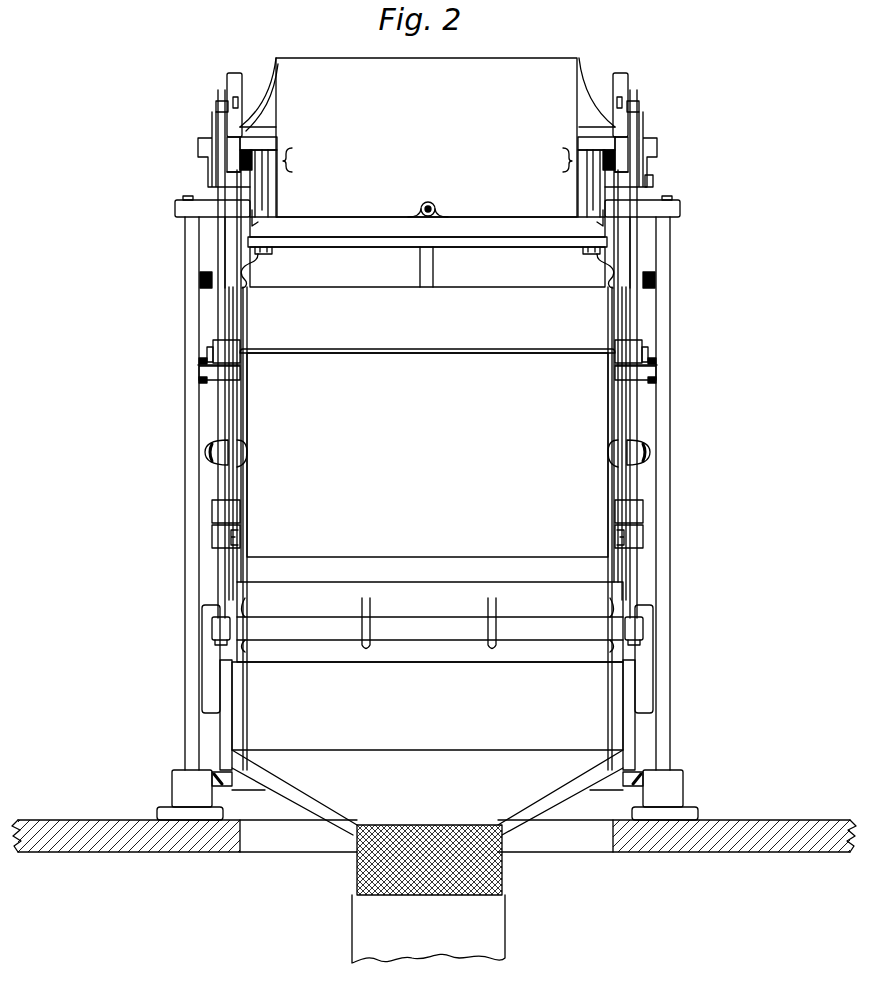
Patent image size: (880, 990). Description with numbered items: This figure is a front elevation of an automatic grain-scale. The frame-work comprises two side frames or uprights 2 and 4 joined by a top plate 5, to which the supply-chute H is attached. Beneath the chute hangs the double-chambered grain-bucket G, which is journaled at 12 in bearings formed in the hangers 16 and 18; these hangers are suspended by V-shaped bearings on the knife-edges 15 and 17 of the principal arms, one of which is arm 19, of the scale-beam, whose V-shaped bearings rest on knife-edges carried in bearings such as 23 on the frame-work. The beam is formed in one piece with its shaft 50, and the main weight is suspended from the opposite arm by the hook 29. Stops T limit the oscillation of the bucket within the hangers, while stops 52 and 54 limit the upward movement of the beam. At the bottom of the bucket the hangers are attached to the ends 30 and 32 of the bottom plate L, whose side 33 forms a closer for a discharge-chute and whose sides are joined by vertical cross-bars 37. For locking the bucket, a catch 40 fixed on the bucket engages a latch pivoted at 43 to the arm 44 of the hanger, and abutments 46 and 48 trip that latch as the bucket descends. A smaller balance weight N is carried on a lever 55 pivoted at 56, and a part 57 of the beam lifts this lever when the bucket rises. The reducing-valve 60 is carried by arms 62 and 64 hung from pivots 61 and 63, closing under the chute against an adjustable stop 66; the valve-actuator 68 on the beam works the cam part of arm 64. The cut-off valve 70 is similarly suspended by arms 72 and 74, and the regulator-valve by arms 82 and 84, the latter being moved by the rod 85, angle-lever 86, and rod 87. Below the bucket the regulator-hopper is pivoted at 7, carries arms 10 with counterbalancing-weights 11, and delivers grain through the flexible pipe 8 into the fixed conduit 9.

The supply-chute H is at (427, 137).
The grain-bucket G is at (427, 455).
The bottom plate L is at (430, 622).
The balance weight N is at (233, 82).
The stops T is at (215, 535).
The side frame 2 is at (670, 305).
The side frame 4 is at (185, 300).
The top plate 5 is at (180, 204).
The pivot 7 is at (228, 786).
The flexible pipe 8 is at (503, 876).
The fixed conduit 9 is at (505, 928).
The arms 10 is at (226, 695).
The counterbalancing-weights 11 is at (212, 672).
The journal 12 is at (205, 452).
The knife-edge 15 is at (645, 136).
The hanger 16 is at (636, 410).
The knife-edge 17 is at (210, 136).
The hanger 18 is at (222, 408).
The principal arm 19 is at (648, 170).
The bearing 23 is at (653, 183).
The hook 29 is at (433, 262).
The end of bottom plate 30 is at (643, 630).
The end of bottom plate 32 is at (215, 630).
The side of bottom plate 33 is at (430, 620).
The cross-bars 37 is at (360, 608).
The catch 40 is at (240, 373).
The latch pivot 43 is at (248, 349).
The arm 44 is at (215, 347).
The abutment 46 is at (199, 380).
The abutment 48 is at (199, 361).
The shaft 50 is at (254, 117).
The stop 52 is at (590, 143).
The stop 54 is at (270, 143).
The lever 55 is at (237, 97).
The lever pivot 56 is at (262, 127).
The beam part 57 is at (235, 155).
The reducing-valve 60 is at (427, 226).
The pivot 61 is at (563, 156).
The arm 62 is at (599, 222).
The pivot 63 is at (283, 180).
The arm 64 is at (256, 222).
The adjustable stop 66 is at (431, 200).
The valve-actuator 68 is at (427, 376).
The cut-off valve 70 is at (377, 249).
The arm 72 is at (590, 197).
The arm 74 is at (264, 196).
The arm 82 is at (585, 180).
The arm 84 is at (270, 178).
The rod 85 is at (234, 405).
The angle-lever 86 is at (252, 262).
The rod 87 is at (280, 245).